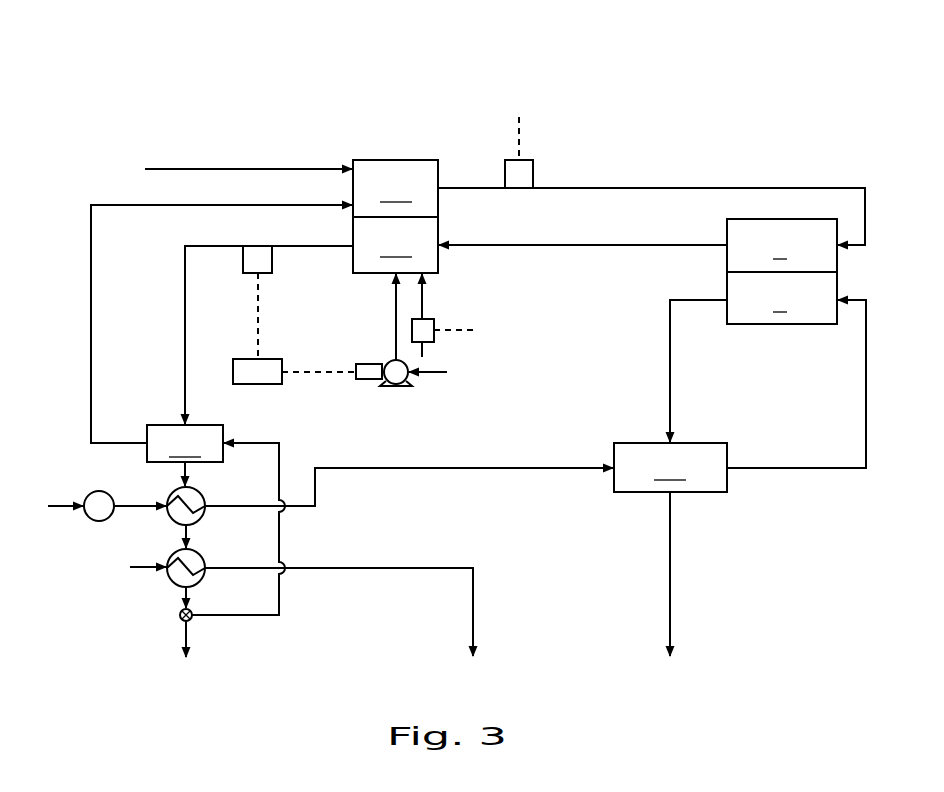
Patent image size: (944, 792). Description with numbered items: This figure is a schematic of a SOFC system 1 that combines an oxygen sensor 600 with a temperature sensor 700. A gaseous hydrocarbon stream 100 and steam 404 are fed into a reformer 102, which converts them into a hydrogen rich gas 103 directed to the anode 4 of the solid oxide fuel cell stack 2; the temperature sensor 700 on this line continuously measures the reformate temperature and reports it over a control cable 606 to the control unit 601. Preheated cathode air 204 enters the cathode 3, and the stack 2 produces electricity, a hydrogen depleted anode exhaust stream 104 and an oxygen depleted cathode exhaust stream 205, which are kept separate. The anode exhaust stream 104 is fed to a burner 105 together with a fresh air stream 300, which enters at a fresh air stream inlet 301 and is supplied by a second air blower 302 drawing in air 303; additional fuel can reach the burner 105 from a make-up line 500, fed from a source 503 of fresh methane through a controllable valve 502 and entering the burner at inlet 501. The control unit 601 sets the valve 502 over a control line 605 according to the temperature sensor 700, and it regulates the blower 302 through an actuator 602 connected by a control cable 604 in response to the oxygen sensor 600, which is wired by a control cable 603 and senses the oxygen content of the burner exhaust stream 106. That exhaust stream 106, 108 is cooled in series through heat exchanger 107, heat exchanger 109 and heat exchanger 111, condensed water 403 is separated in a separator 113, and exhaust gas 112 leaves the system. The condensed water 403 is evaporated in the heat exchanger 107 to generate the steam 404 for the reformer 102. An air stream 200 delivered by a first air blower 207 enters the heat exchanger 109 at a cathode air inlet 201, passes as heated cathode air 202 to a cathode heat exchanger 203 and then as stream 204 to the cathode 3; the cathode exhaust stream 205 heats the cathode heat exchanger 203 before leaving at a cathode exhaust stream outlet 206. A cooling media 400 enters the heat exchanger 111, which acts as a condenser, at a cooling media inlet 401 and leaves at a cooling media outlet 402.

The SOFC system 1 is at (722, 106).
The solid oxide fuel cell stack 2 is at (727, 252).
The cathode 3 is at (782, 298).
The anode 4 is at (782, 245).
The gaseous hydrocarbon stream 100 is at (240, 168).
The reformer 102 is at (395, 188).
The stream of hydrogen rich gas 103 is at (565, 188).
The anode exhaust stream 104 is at (580, 246).
The burner 105 is at (395, 245).
The burner exhaust stream 106 is at (185, 315).
The heat exchanger 107 is at (185, 443).
The burner exhaust stream 108 is at (190, 468).
The heat exchanger 109 is at (196, 517).
The heat exchanger 111 is at (196, 580).
The exhaust gas 112 is at (190, 635).
The separator 113 is at (180, 622).
The air stream 200 is at (48, 506).
The cathode air inlet 201 is at (165, 510).
The heated cathode air 202 is at (517, 468).
The cathode heat exchanger 203 is at (670, 467).
The preheated cathode air stream 204 is at (866, 410).
The cathode exhaust stream 205 is at (670, 410).
The cathode exhaust stream outlet 206 is at (670, 585).
The first air blower 207 is at (97, 510).
The fresh air stream 300 is at (396, 318).
The fresh air stream inlet 301 is at (385, 275).
The second air blower 302 is at (397, 380).
The air 303 is at (438, 372).
The cooling media 400 is at (130, 568).
The inlet 401 is at (162, 570).
The cooling media outlet 402 is at (473, 612).
The condensed water 403 is at (279, 535).
The steam 404 is at (91, 367).
The make-up line 500 is at (423, 293).
The inlet 501 is at (438, 276).
The controllable valve 502 is at (425, 330).
The source of fresh methane 503 is at (423, 354).
The oxygen sensor 600 is at (262, 261).
The control unit 601 is at (258, 373).
The actuator 602 is at (363, 378).
The control cable 603 is at (258, 310).
The control cable 604 is at (320, 373).
The control line 605 is at (478, 330).
The control cable 606 is at (519, 120).
The temperature sensor 700 is at (506, 170).